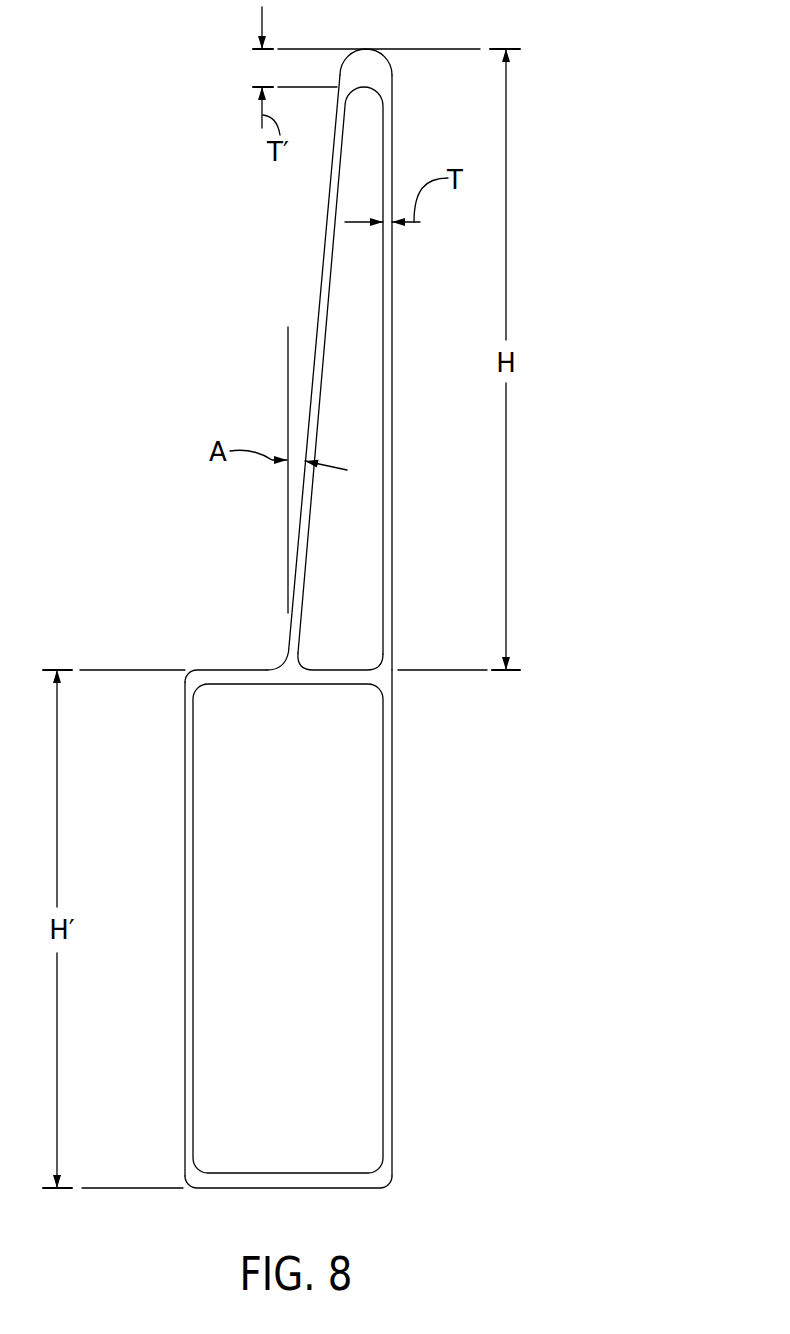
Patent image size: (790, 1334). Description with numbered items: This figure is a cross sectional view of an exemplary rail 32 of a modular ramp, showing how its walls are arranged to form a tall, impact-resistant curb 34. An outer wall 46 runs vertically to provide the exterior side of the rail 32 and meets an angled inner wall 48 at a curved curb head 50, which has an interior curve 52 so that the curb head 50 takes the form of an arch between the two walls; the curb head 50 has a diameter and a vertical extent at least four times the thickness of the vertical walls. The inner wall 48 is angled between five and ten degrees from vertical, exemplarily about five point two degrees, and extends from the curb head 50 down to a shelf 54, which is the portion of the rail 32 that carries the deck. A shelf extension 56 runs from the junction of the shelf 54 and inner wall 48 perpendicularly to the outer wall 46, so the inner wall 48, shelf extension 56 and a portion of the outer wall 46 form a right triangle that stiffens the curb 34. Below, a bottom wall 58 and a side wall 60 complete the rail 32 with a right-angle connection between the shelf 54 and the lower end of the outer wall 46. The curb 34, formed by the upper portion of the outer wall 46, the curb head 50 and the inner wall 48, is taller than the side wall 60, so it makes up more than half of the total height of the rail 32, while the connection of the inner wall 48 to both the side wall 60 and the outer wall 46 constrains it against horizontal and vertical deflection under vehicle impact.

The rail 32 is at (527, 723).
The curb 34 is at (448, 293).
The outer wall 46 is at (392, 612).
The inner wall 48 is at (319, 302).
The curb head 50 is at (365, 68).
The interior curve 52 is at (366, 88).
The shelf 54 is at (235, 678).
The shelf extension 56 is at (342, 670).
The bottom wall 58 is at (288, 1173).
The side wall 60 is at (185, 930).